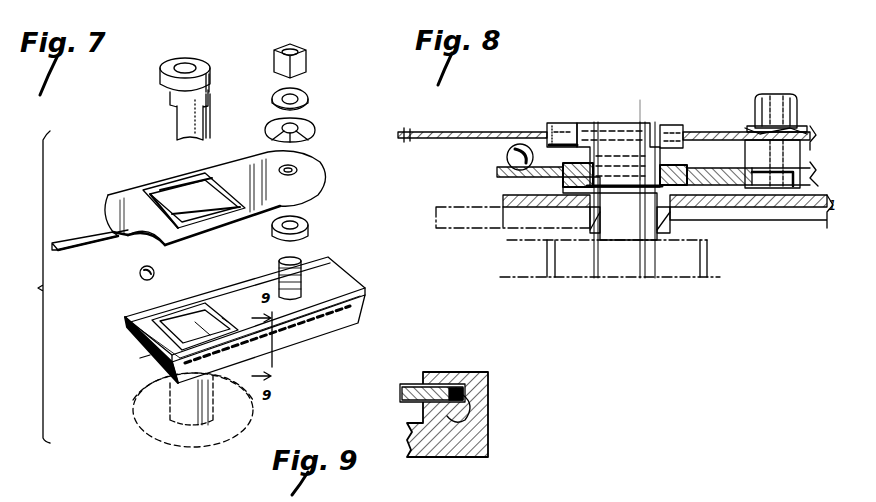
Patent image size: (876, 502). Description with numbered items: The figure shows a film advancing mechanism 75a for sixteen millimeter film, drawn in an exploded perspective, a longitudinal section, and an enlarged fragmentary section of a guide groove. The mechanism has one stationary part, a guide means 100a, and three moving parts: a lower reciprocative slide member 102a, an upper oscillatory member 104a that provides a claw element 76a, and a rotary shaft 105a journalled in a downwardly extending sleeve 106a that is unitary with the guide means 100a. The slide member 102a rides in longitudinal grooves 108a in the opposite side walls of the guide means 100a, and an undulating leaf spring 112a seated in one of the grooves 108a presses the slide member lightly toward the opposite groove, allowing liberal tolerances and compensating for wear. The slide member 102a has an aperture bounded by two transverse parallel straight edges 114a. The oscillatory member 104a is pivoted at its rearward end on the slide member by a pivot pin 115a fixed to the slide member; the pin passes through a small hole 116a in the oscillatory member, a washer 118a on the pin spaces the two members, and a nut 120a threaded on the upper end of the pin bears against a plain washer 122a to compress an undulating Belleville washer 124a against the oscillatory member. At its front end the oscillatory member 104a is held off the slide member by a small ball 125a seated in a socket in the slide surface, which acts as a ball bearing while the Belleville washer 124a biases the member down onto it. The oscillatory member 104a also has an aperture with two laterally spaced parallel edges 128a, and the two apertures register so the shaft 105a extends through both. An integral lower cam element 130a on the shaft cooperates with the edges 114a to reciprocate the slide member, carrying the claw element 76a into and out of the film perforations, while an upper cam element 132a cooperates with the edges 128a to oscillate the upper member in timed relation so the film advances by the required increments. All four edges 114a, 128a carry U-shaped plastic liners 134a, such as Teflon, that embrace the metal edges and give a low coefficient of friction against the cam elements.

In FIG. 7, the film advancing mechanism 75a is at (29, 287).
In FIG. 8, the film advancing mechanism 75a is at (726, 90).
In FIG. 7, the claw element 76a is at (84, 238).
In FIG. 7, the guide means 100a is at (322, 333).
In FIG. 8, the guide means 100a is at (770, 210).
In FIG. 7, the slide member 102a is at (352, 287).
In FIG. 8, the slide member 102a is at (497, 172).
In FIG. 7, the oscillatory member 104a is at (130, 200).
In FIG. 8, the oscillatory member 104a is at (432, 135).
In FIG. 7, the shaft 105a is at (178, 119).
In FIG. 8, the shaft 105a is at (620, 222).
In FIG. 7, the sleeve 106a is at (173, 393).
In FIG. 8, the sleeve 106a is at (680, 220).
In FIG. 9, the longitudinal grooves 108a is at (456, 388).
In FIG. 7, the leaf spring 112a is at (272, 337).
In FIG. 9, the leaf spring 112a is at (470, 414).
In FIG. 7, the parallel straight edges 114a is at (197, 310).
In FIG. 8, the parallel straight edges 114a is at (594, 208).
In FIG. 7, the pivot pin 115a is at (305, 276).
In FIG. 8, the pivot pin 115a is at (790, 70).
In FIG. 7, the small hole 116a is at (297, 168).
In FIG. 7, the washer 118a is at (308, 220).
In FIG. 7, the nut 120a is at (306, 68).
In FIG. 8, the nut 120a is at (792, 96).
In FIG. 7, the plain washer 122a is at (308, 96).
In FIG. 8, the plain washer 122a is at (768, 126).
In FIG. 7, the Belleville washer 124a is at (314, 130).
In FIG. 8, the Belleville washer 124a is at (760, 130).
In FIG. 7, the ball 125a is at (139, 277).
In FIG. 8, the ball 125a is at (507, 151).
In FIG. 7, the parallel edges 128a is at (202, 182).
In FIG. 8, the parallel edges 128a is at (560, 128).
In FIG. 7, the lower cam element 130a is at (211, 101).
In FIG. 8, the lower cam element 130a is at (620, 158).
In FIG. 7, the upper cam element 132a is at (210, 82).
In FIG. 8, the upper cam element 132a is at (604, 126).
In FIG. 7, the liners 134a is at (128, 228).
In FIG. 8, the liners 134a is at (663, 125).